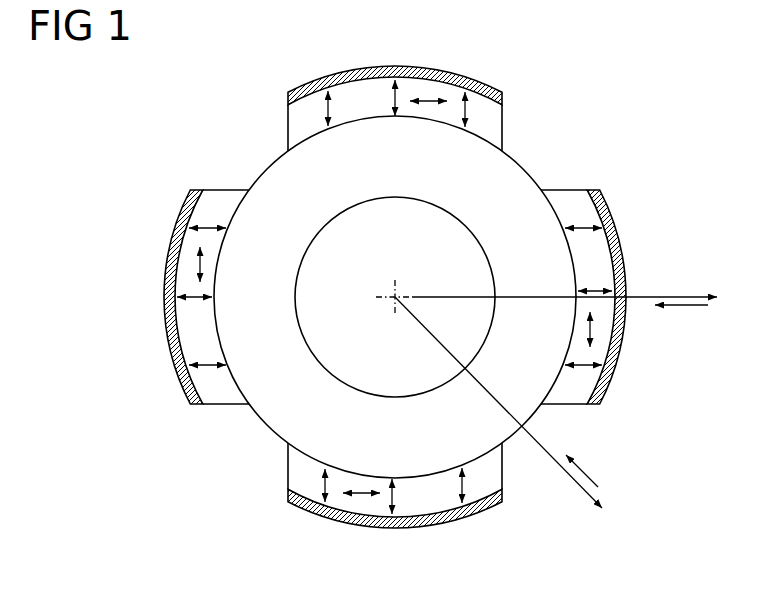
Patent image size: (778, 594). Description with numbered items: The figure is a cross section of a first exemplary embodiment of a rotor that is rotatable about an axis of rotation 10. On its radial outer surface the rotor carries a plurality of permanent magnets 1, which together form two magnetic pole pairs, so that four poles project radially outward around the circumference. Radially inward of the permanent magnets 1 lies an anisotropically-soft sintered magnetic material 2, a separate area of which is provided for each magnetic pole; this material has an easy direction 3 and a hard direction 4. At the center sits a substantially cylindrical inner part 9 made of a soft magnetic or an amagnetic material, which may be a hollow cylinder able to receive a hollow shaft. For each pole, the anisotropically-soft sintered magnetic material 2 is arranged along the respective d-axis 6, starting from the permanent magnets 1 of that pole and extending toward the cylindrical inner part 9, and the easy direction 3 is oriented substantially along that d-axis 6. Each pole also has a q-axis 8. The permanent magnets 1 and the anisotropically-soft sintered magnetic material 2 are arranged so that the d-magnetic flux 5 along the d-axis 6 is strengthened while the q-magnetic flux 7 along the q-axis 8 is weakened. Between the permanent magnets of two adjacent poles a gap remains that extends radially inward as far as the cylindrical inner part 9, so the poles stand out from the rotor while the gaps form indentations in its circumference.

The permanent magnets 1 is at (436, 70).
The anisotropically-soft sintered magnetic material 2 is at (500, 120).
The easy direction 3 is at (395, 100).
The hard direction 4 is at (430, 104).
The d-magnetic flux 5 is at (688, 308).
The d-axis 6 is at (688, 294).
The q-magnetic flux 7 is at (588, 470).
The q-axis 8 is at (583, 490).
The cylindrical inner part 9 is at (280, 172).
The axis of rotation 10 is at (394, 297).